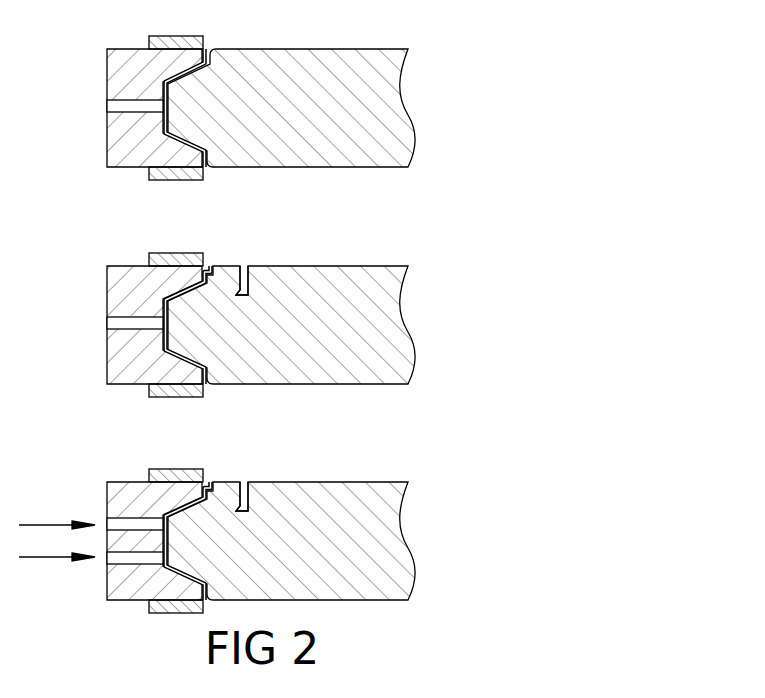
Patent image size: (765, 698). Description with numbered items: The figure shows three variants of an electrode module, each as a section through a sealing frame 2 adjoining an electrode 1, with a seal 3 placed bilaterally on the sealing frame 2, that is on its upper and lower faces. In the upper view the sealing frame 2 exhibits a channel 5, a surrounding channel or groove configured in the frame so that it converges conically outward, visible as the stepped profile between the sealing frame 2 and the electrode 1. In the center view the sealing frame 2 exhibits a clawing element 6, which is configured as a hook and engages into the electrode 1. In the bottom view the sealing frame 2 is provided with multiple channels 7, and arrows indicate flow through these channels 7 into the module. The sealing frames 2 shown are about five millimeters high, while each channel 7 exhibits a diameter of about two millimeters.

The electrode 1 is at (325, 90).
The sealing frame 2 is at (126, 153).
The seal 3 is at (193, 42).
The channel 5 is at (187, 70).
The clawing element 6 is at (248, 291).
The channels 7 is at (118, 525).